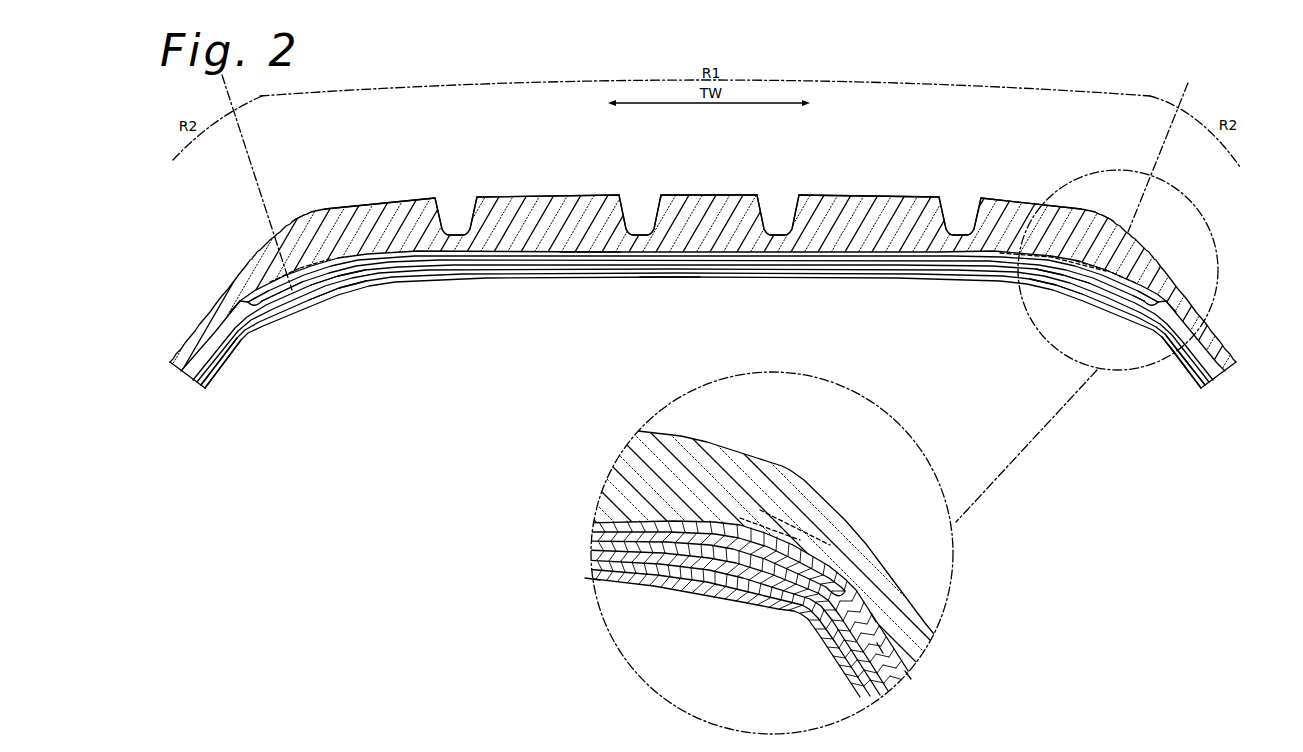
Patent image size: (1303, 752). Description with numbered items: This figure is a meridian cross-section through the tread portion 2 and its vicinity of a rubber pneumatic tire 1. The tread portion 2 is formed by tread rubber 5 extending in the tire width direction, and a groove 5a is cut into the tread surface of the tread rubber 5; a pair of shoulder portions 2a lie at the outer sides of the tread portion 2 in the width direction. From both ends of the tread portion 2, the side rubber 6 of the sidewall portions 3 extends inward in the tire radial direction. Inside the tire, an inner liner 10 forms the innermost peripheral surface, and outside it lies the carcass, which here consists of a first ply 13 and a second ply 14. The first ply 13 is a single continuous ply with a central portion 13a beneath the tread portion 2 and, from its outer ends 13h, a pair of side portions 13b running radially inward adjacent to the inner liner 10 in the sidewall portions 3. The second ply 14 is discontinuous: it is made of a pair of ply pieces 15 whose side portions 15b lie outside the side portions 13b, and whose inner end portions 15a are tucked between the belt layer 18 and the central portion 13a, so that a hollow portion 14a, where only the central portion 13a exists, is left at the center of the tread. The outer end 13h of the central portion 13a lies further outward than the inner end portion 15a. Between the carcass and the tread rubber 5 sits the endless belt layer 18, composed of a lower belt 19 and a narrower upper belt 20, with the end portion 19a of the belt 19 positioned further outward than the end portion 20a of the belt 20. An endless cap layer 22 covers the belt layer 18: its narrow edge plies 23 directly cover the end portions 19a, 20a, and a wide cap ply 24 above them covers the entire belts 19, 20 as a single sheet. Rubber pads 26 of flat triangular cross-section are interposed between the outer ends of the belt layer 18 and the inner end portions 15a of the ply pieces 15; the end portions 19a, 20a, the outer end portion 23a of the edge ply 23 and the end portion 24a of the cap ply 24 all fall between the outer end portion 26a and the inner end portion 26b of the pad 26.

The pneumatic tire 1 is at (343, 193).
The tread portion 2 is at (708, 190).
The shoulder portion 2a is at (305, 243).
The sidewall portion 3 is at (194, 380).
The tread rubber 5 is at (871, 215).
The groove 5a is at (779, 205).
The side rubber 6 is at (203, 320).
The inner liner 10 is at (715, 277).
The first carcass ply 13 is at (796, 272).
The central portion 13a is at (671, 277).
The side portion 13b is at (233, 363).
The outer end 13h is at (321, 322).
The second carcass ply 14 is at (262, 338).
The hollow portion 14a is at (592, 247).
The ply piece 15 is at (1146, 336).
The inner end portion 15a is at (349, 301).
The side portion 15b is at (212, 386).
The belt layer 18 is at (856, 346).
The belt 19 is at (866, 321).
The end portion 19a is at (254, 300).
The belt 20 is at (905, 321).
The end portion 20a is at (262, 295).
The cap layer 22 is at (1122, 134).
The edge ply 23 is at (1092, 264).
The end portion 23a is at (236, 305).
The cap ply 24 is at (1052, 254).
The end portion 24a is at (244, 300).
The pad 26 is at (283, 318).
The end portion 26a is at (908, 675).
The end portion 26b is at (596, 582).